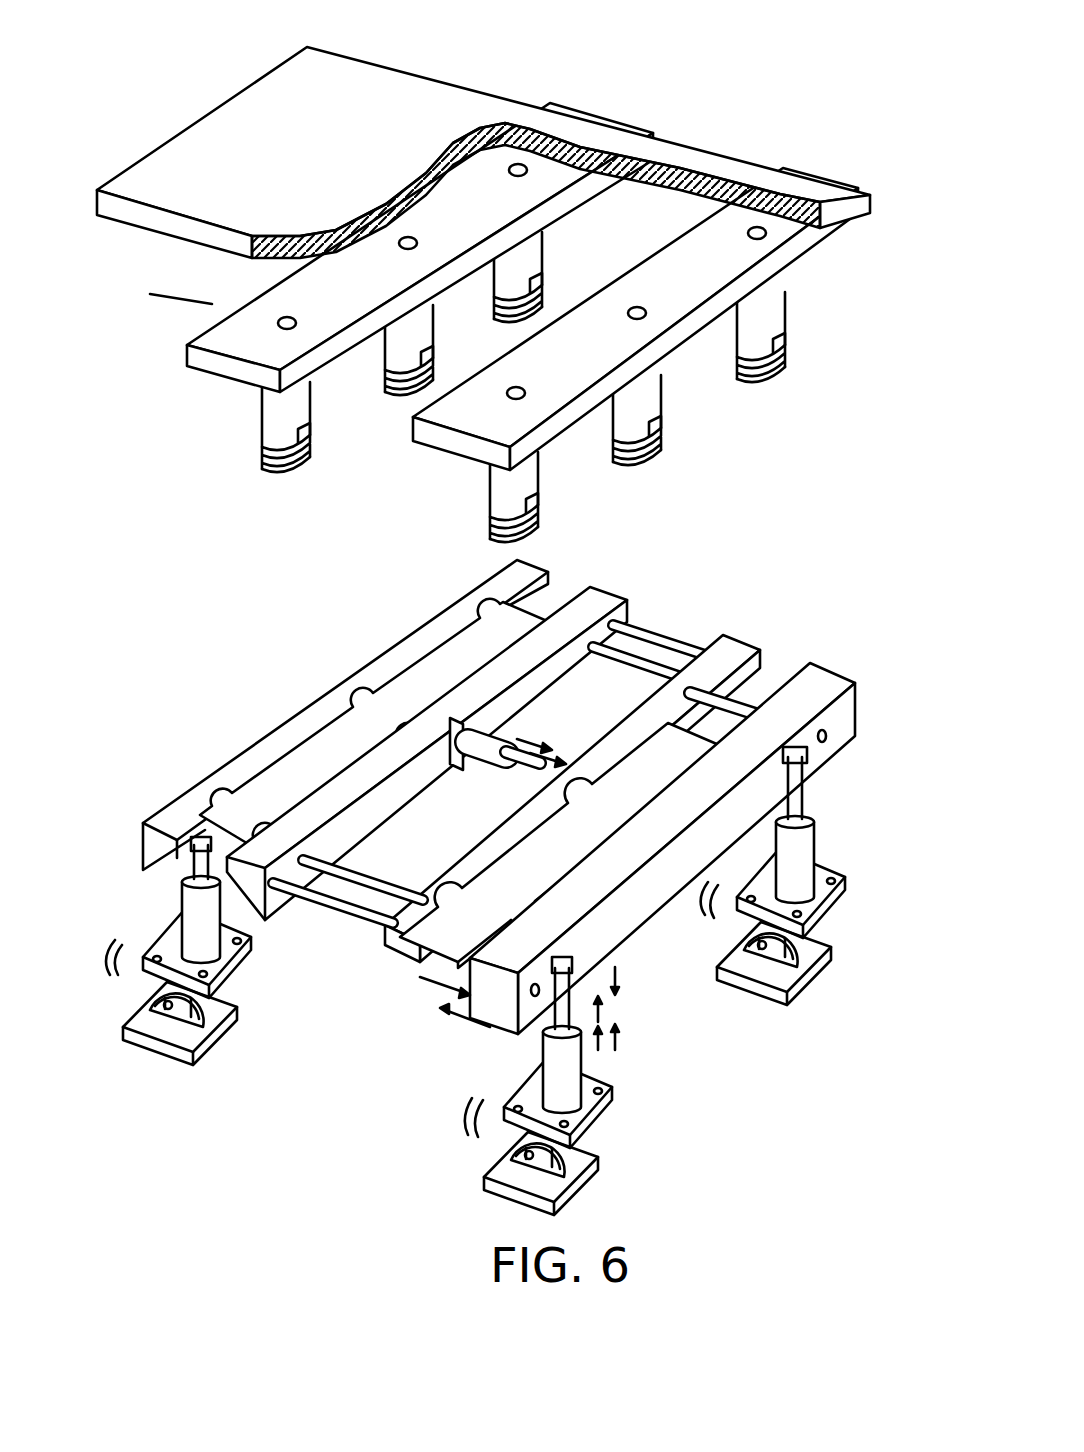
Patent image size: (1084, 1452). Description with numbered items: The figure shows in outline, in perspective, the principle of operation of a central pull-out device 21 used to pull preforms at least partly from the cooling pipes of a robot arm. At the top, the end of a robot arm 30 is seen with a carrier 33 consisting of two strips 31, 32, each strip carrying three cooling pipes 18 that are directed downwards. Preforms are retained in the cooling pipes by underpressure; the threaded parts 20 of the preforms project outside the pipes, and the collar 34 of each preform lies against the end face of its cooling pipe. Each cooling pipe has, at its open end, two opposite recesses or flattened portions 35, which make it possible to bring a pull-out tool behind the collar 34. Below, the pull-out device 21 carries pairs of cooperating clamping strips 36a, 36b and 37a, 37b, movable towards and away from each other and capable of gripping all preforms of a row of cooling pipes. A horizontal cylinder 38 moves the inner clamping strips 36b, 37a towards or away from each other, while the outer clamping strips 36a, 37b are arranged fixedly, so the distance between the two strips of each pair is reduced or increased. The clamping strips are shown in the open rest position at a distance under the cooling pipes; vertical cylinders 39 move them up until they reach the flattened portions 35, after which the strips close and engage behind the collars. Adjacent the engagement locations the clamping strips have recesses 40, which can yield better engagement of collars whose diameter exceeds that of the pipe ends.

The robot arm 30 is at (402, 95).
The strip 31 is at (718, 285).
The strip 32 is at (437, 224).
The carrier 33 is at (163, 294).
The cooling pipe 18 is at (530, 248).
The collar 34 is at (527, 300).
The flattened portion 35 is at (310, 442).
The threaded part 20 is at (500, 330).
The central pull-out device 21 is at (551, 780).
The clamping strip 36a is at (813, 683).
The clamping strip 36b is at (730, 648).
The clamping strip 37a is at (628, 580).
The clamping strip 37b is at (410, 648).
The horizontal cylinder 38 is at (490, 758).
The vertical cylinder 39 is at (200, 917).
The recess 40 is at (637, 817).